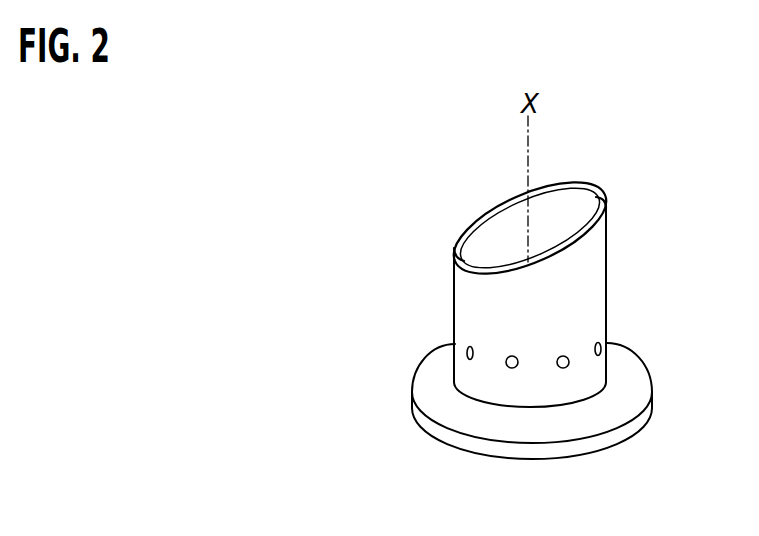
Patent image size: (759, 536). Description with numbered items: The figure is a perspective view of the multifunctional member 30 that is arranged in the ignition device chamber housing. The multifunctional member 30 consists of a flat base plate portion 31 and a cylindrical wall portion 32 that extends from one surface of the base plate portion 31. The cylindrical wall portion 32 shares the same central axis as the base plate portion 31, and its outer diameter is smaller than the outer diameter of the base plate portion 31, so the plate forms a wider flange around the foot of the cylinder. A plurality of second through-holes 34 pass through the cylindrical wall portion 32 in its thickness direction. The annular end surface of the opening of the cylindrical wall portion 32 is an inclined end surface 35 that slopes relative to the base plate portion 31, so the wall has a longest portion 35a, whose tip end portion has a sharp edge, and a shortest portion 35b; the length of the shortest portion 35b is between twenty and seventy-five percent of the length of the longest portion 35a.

The multifunctional member 30 is at (426, 330).
The base plate portion 31 is at (448, 433).
The cylindrical wall portion 32 is at (598, 284).
The second through-holes 34 is at (608, 343).
The inclined end surface 35 is at (506, 210).
The longest portion 35a is at (603, 196).
The shortest portion 35b is at (458, 258).